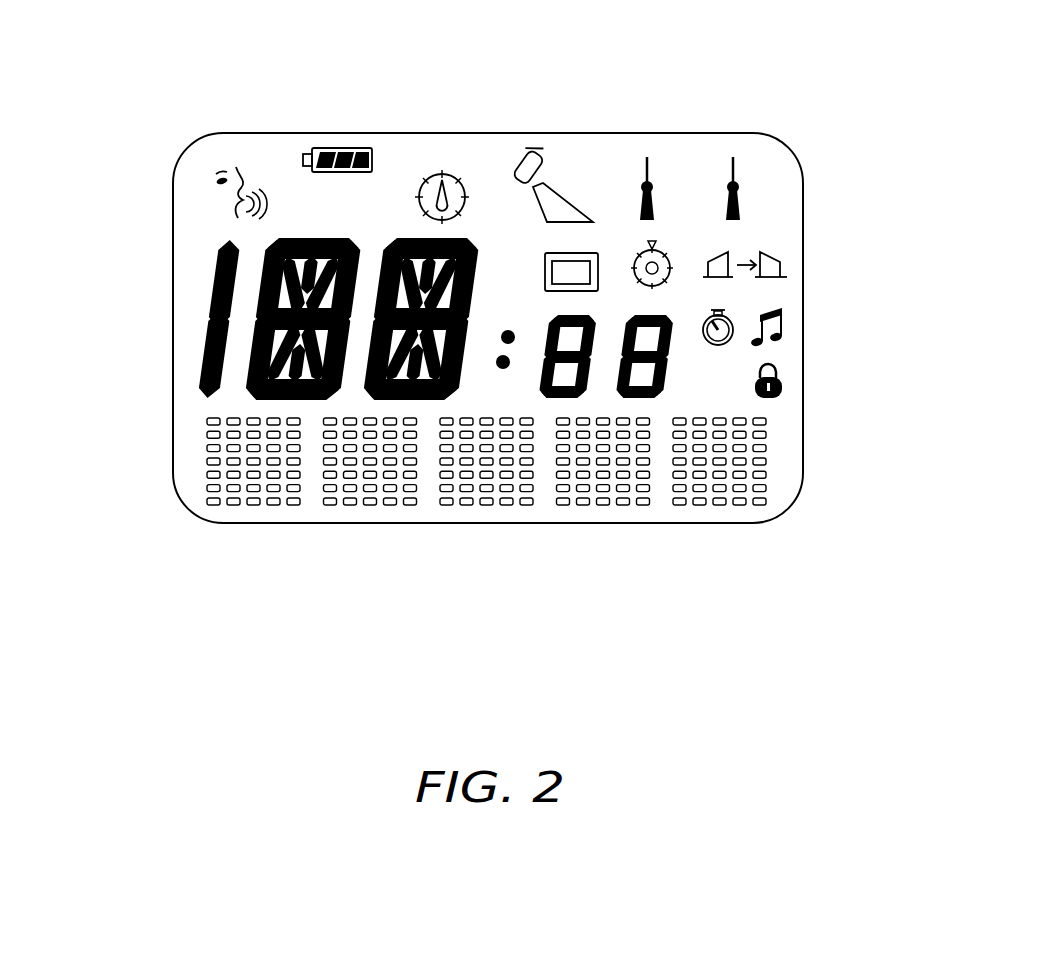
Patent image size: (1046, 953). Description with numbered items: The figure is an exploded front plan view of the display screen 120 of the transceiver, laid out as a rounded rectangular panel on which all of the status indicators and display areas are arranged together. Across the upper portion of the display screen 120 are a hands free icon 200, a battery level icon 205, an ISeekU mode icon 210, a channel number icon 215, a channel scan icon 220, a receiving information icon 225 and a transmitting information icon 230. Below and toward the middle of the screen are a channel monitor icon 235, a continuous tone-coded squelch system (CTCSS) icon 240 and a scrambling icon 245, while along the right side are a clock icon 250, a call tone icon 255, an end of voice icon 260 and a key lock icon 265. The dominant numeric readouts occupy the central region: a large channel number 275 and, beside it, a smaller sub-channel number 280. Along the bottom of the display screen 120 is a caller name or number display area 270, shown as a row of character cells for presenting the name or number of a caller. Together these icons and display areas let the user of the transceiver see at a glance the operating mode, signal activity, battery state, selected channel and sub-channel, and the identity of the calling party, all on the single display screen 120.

The display screen 120 is at (172, 482).
The hands free icon 200 is at (207, 175).
The battery level icon 205 is at (315, 140).
The ISeekU mode icon 210 is at (305, 208).
The channel number icon 215 is at (435, 140).
The channel scan icon 220 is at (523, 148).
The receiving information icon 225 is at (668, 150).
The transmitting information icon 230 is at (760, 157).
The channel monitor icon 235 is at (548, 298).
The continuous tone-coded squelch system (CTCSS) icon 240 is at (625, 232).
The scrambling icon 245 is at (782, 250).
The clock icon 250 is at (738, 346).
The call tone icon 255 is at (788, 322).
The end of voice icon 260 is at (735, 400).
The key lock icon 265 is at (785, 395).
The caller name or number display area 270 is at (617, 500).
The channel number 275 is at (197, 372).
The sub-channel number 280 is at (558, 403).